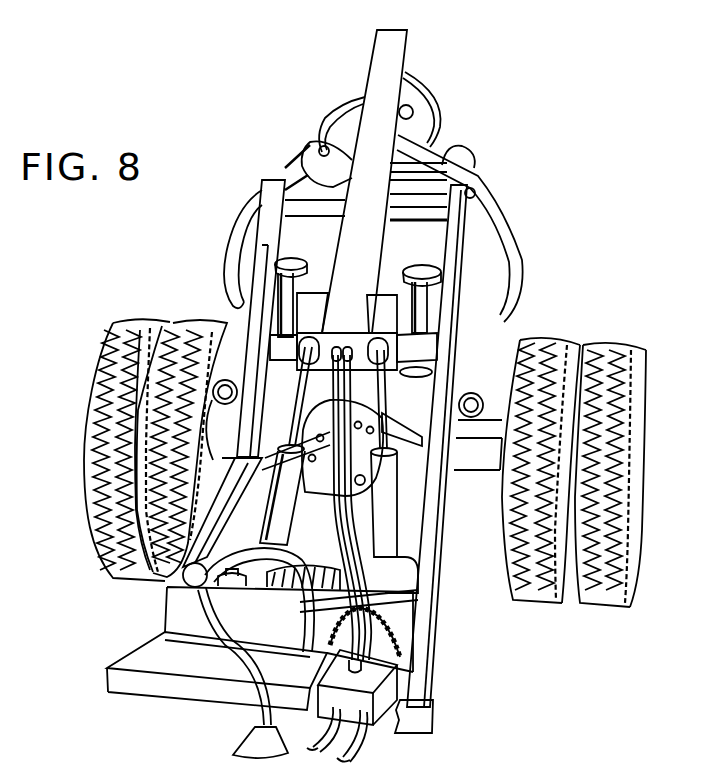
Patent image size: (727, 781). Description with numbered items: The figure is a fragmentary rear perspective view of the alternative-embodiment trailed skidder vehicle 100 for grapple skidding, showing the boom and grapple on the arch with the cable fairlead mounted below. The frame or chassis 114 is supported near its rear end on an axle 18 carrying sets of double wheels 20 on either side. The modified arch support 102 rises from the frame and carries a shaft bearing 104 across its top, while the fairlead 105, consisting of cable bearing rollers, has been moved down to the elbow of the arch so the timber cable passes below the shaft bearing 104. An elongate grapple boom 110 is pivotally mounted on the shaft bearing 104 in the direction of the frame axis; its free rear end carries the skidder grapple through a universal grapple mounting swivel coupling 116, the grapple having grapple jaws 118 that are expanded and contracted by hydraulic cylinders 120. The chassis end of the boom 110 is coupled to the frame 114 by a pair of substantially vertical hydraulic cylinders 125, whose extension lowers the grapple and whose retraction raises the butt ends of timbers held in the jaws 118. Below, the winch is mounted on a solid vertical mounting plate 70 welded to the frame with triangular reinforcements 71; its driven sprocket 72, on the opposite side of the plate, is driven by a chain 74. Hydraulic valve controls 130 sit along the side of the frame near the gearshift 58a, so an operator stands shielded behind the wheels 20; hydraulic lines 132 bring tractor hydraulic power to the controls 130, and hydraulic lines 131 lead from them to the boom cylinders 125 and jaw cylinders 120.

The trailed skidder vehicle 100 is at (134, 286).
The wheels 20 is at (130, 322).
The grapple boom 110 is at (386, 30).
The universal grapple mounting swivel coupling 116 is at (412, 104).
The hydraulic lines 131 is at (342, 112).
The hydraulic rams or cylinders 120 is at (306, 152).
The grapple jaws 118 is at (232, 228).
The arch support 102 is at (466, 233).
The shaft bearing 104 is at (438, 226).
The fairlead 105 is at (314, 280).
The axle 18 is at (500, 472).
The frame or chassis 114 is at (446, 597).
The hydraulic cylinders 125 is at (280, 518).
The mounting plate 70 is at (257, 624).
The gearshift 58a is at (200, 603).
The triangular reinforcements 71 is at (400, 600).
The chain 74 is at (395, 628).
The driven sprocket 72 is at (380, 650).
The hydraulic valve controls 130 is at (415, 692).
The hydraulic lines 132 is at (363, 737).